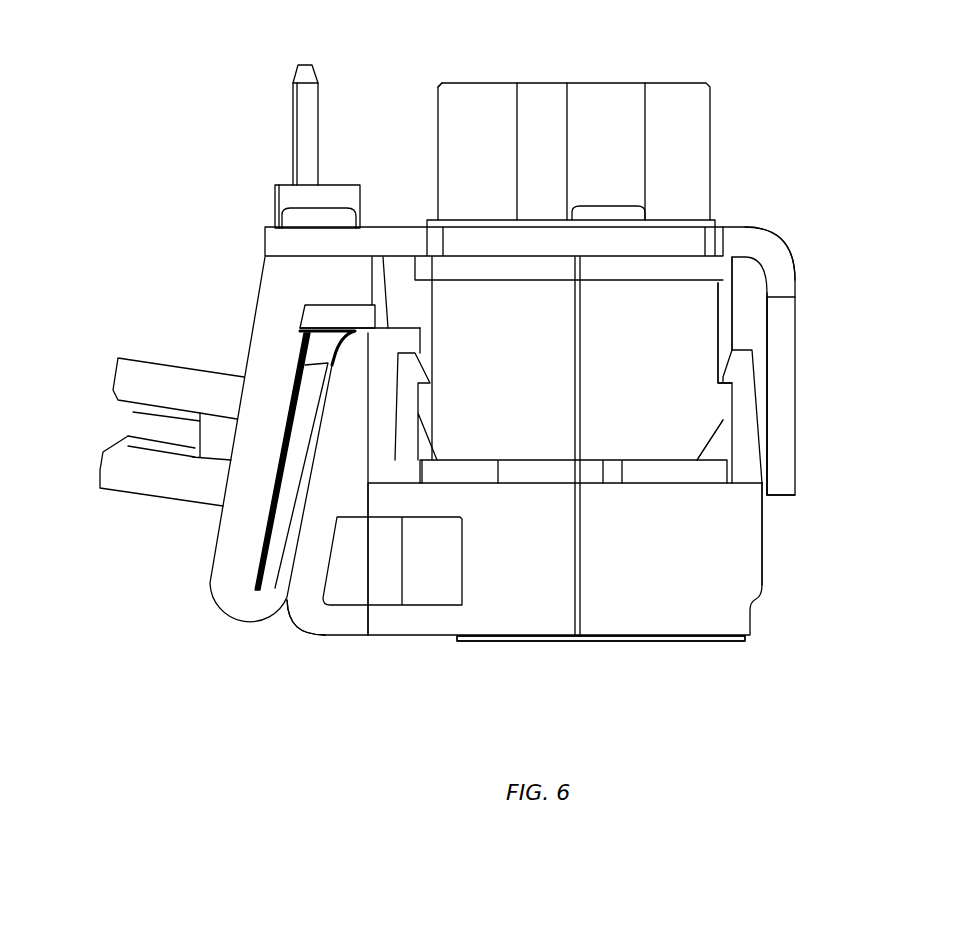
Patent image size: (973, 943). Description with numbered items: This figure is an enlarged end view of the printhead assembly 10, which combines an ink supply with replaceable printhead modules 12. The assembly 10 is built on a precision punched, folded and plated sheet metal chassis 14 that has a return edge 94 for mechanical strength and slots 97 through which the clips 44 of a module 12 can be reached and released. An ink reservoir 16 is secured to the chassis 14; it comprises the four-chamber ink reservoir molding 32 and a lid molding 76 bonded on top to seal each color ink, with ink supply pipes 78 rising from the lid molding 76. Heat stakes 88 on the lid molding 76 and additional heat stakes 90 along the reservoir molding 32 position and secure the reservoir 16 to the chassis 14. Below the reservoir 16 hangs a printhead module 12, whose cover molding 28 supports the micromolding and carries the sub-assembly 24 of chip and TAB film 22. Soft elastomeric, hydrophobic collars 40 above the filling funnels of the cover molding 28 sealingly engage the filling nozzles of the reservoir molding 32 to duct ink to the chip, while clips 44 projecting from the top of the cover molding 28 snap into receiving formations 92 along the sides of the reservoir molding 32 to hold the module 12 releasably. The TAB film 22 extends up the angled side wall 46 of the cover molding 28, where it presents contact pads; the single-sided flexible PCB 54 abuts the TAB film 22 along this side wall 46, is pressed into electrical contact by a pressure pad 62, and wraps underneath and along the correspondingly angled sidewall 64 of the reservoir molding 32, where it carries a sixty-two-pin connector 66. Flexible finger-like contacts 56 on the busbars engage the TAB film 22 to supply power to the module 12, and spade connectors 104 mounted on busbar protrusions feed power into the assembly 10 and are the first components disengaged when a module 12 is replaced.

The printhead assembly 10 is at (853, 128).
The printhead module 12 is at (774, 578).
The chassis 14 is at (830, 248).
The ink reservoir 16 is at (752, 343).
The TAB film 22 is at (643, 642).
The sub-assembly 24 is at (755, 645).
The cover molding 28 is at (745, 533).
The ink reservoir molding 32 is at (698, 420).
The collar 40 is at (586, 478).
The clips 44 is at (422, 377).
The angled side wall 46 is at (353, 634).
The flexible PCB 54 is at (278, 620).
The contacts 56 is at (320, 328).
The pressure pad 62 is at (278, 585).
The angled sidewall 64 is at (237, 557).
The 62-pin connector 66 is at (196, 380).
The lid molding 76 is at (746, 270).
The ink supply pipes 78 is at (700, 124).
The heat stakes 88 is at (602, 206).
The heat stakes 90 is at (292, 222).
The receiving formations 92 is at (735, 303).
The return edge 94 is at (780, 422).
The slots 97 is at (755, 243).
The spade connectors 104 is at (308, 121).